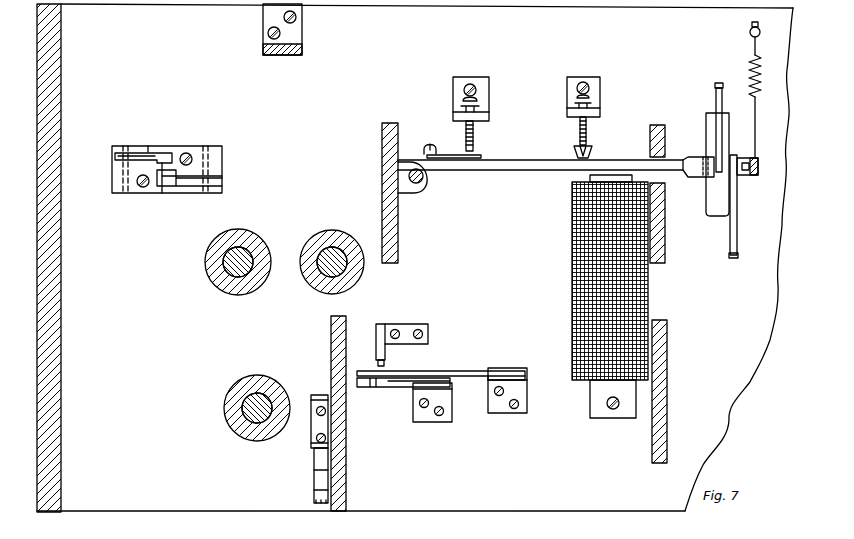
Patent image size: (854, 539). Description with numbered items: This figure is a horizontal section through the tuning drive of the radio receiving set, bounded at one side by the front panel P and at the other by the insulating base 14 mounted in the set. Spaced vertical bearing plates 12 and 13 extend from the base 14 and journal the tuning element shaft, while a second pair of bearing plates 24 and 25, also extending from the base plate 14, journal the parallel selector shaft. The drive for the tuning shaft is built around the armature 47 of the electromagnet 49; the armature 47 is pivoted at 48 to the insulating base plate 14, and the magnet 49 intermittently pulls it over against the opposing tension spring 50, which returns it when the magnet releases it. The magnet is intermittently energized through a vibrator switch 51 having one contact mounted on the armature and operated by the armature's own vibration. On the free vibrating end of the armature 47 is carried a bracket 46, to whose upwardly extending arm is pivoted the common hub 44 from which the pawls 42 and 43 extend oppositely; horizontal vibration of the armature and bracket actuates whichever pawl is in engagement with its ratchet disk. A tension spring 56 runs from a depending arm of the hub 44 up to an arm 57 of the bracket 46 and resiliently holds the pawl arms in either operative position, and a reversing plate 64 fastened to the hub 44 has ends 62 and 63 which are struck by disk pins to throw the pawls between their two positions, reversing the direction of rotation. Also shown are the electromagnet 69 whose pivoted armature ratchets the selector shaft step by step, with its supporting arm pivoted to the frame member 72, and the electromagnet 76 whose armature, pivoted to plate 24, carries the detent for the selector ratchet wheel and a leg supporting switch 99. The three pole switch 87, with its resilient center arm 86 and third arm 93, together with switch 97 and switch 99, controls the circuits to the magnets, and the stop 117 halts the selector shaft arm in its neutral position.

The front panel P is at (62, 330).
The bearing plate 12 is at (382, 134).
The bearing plate 13 is at (651, 126).
The insulating base 14 is at (118, 504).
The bearing plate 24 is at (331, 343).
The bearing plate 25 is at (668, 345).
The pawl 42 is at (718, 83).
The pawl 43 is at (732, 258).
The hub 44 is at (733, 155).
The bracket 46 is at (688, 152).
The armature 47 is at (540, 166).
The pivot 48 is at (426, 180).
The electromagnet 49 is at (572, 258).
The tension spring 50 is at (760, 62).
The vibrator switch 51 is at (485, 150).
The tension spring 56 is at (748, 176).
The arm 57 is at (758, 168).
The end of reversing plate 62 is at (706, 115).
The end of reversing plate 63 is at (714, 218).
The reversing plate 64 is at (718, 201).
The electromagnet 69 is at (229, 280).
The frame member 72 is at (283, 56).
The electromagnet 76 is at (224, 427).
The center arm 86 is at (157, 172).
The three pole switch 87 is at (166, 140).
The third arm 93 is at (160, 152).
The switch 97 is at (379, 392).
The switch 99 is at (304, 485).
The stop 117 is at (384, 353).